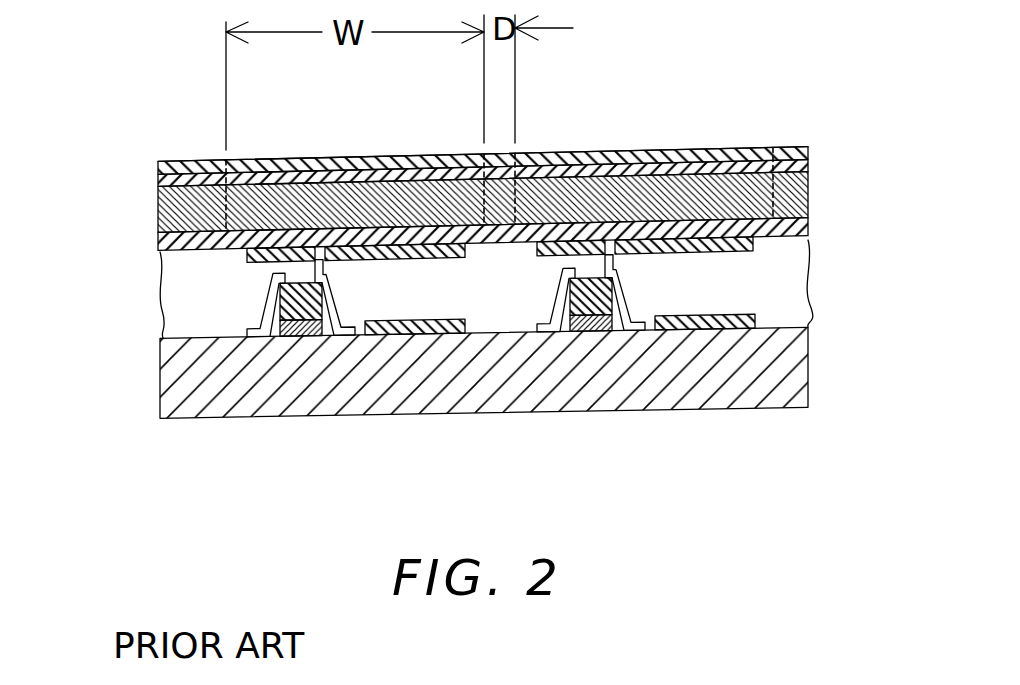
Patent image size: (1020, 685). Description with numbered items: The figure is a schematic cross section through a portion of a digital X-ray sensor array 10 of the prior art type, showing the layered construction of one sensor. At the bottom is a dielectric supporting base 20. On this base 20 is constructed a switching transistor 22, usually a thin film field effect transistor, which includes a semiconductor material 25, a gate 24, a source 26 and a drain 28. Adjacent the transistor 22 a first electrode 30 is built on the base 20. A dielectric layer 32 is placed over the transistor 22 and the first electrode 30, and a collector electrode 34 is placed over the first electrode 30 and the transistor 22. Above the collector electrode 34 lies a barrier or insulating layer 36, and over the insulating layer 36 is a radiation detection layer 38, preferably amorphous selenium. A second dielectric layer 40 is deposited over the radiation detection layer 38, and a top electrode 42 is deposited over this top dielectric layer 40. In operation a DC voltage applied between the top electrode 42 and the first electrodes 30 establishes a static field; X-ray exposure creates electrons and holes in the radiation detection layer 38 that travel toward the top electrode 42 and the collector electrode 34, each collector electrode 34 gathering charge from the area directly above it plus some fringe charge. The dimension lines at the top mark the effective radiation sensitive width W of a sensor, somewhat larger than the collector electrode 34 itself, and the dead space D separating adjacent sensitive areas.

The liquid crystal display 10 is at (723, 118).
The dielectric supporting base 20 is at (702, 367).
The switching transistor 22 is at (224, 328).
The gate 24 is at (570, 315).
The semiconductor material 25 is at (587, 300).
The source 26 is at (567, 280).
The drain 28 is at (616, 292).
The first electrode 30 is at (700, 320).
The dielectric layer 32 is at (780, 285).
The collector electrode 34 is at (738, 243).
The insulating layer 36 is at (170, 247).
The radiation detection layer 38 is at (168, 210).
The second dielectric layer 40 is at (173, 184).
The top electrode 42 is at (172, 172).